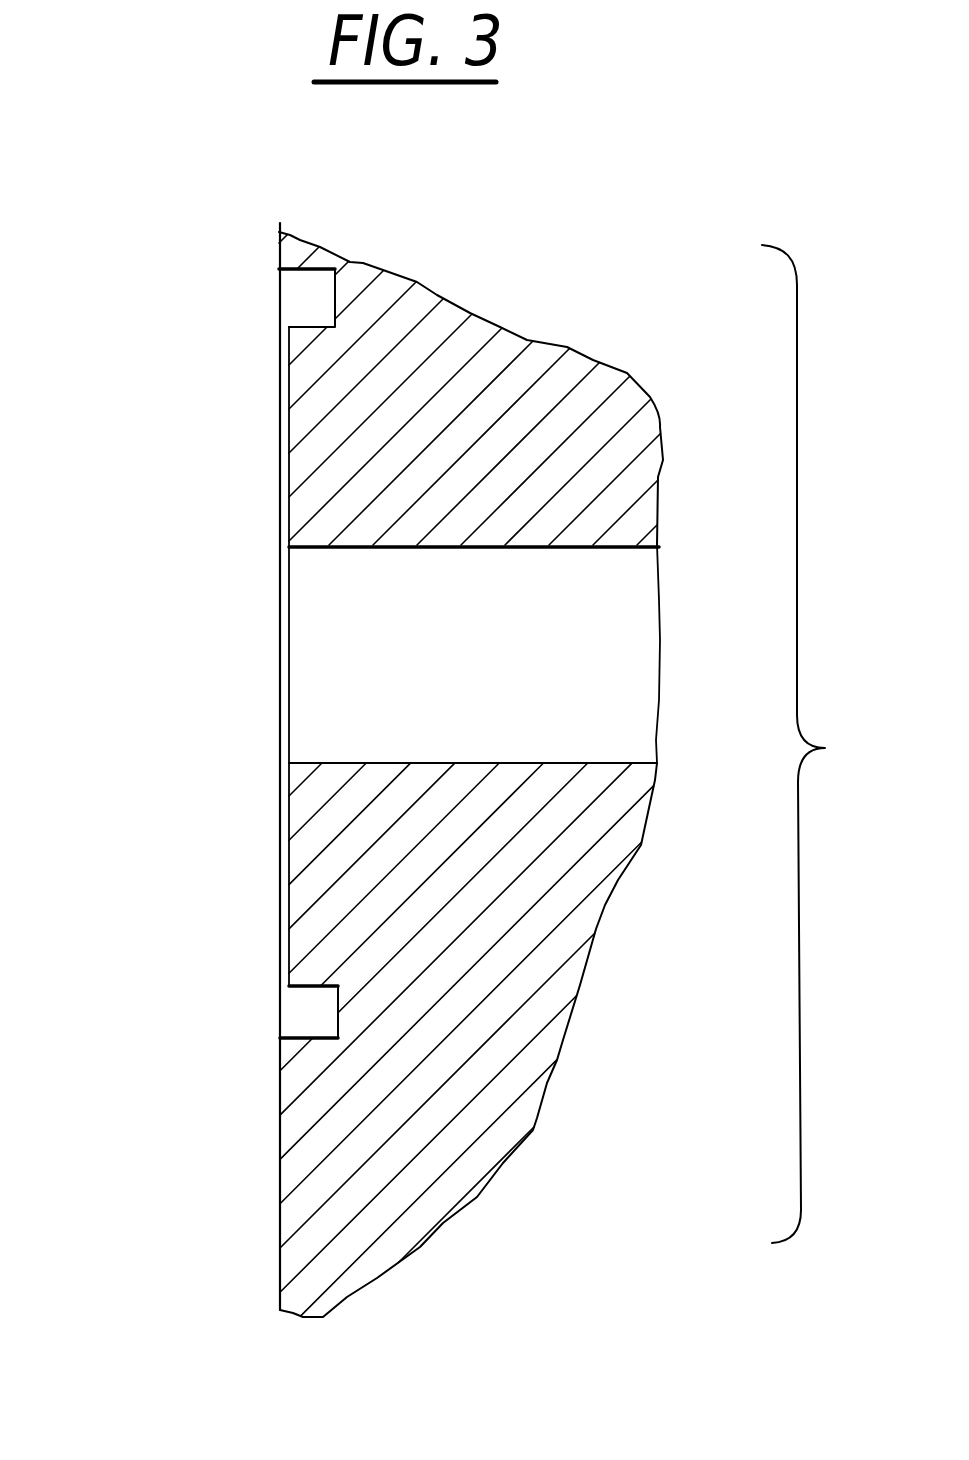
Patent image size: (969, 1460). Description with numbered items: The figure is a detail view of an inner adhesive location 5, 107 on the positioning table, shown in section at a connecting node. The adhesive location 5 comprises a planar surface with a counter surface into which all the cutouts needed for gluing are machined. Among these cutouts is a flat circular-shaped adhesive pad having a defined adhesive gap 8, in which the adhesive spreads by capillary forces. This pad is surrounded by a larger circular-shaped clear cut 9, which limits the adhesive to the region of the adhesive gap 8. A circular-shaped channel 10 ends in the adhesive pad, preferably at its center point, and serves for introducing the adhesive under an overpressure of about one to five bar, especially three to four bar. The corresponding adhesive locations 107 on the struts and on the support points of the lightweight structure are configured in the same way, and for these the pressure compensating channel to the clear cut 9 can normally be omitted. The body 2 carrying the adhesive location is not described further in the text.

The body 2 is at (517, 1117).
The adhesive location 5 is at (811, 744).
The adhesive gap 8 is at (287, 888).
The clear cut 9 is at (302, 1012).
The channel 10 is at (625, 623).
The adhesive location 107 is at (182, 453).